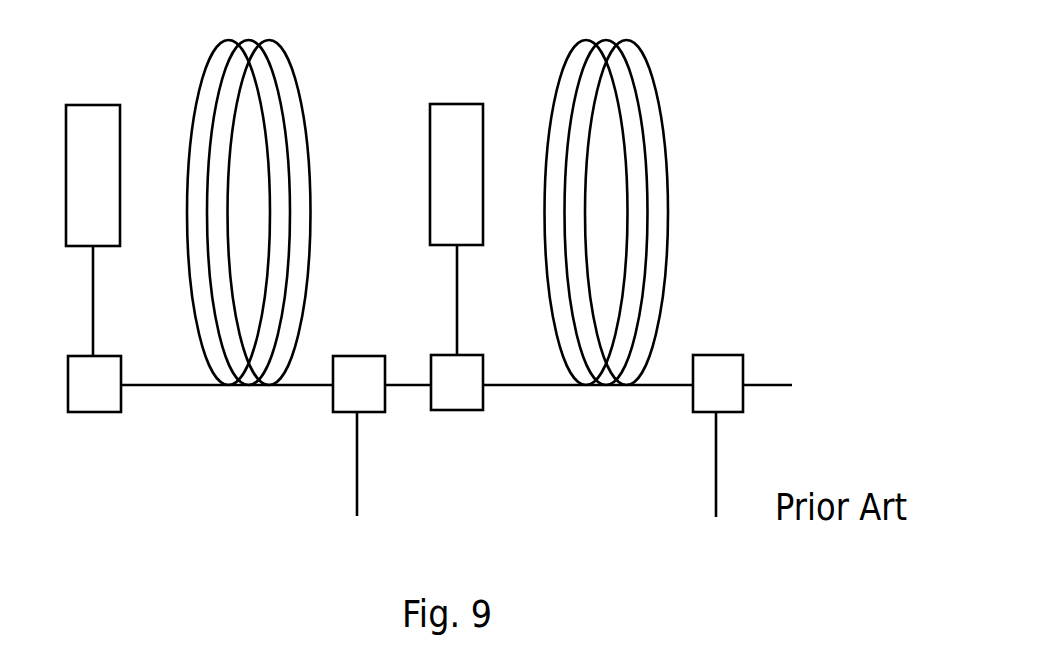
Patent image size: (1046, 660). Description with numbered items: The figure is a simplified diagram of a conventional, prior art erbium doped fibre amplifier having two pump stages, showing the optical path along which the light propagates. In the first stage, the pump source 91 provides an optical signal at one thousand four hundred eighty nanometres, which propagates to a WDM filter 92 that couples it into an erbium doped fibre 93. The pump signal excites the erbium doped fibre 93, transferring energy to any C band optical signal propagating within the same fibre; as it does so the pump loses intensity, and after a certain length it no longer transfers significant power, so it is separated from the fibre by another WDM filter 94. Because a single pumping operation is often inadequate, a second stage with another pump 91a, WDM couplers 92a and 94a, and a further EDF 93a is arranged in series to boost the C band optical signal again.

The pump source 91 is at (82, 104).
The WDM filter 92 is at (80, 412).
The erbium doped fibre 93 is at (307, 124).
The WDM filter 94 is at (340, 413).
The pump 91a is at (453, 103).
The WDM coupler 92a is at (455, 412).
The EDF 93a is at (662, 127).
The WDM coupler 94a is at (702, 413).